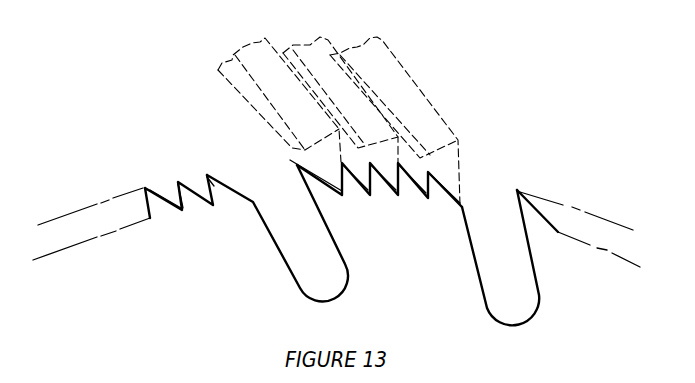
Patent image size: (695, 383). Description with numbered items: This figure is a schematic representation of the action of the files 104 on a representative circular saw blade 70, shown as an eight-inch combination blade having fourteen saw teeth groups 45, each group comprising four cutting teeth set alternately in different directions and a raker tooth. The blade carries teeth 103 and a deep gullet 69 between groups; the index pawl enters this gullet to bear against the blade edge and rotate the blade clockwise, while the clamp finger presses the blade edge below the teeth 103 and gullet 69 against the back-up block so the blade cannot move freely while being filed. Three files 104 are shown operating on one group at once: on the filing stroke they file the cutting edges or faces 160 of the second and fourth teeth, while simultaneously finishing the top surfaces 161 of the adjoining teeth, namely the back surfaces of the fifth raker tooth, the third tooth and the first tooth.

The saw teeth groups 45 is at (418, 280).
The deep gullet 69 is at (510, 287).
The circular saw blade 70 is at (580, 297).
The teeth 103 is at (207, 175).
The files 104 is at (265, 57).
The cutting edges or faces 160 is at (297, 165).
The top surfaces 161 is at (378, 178).